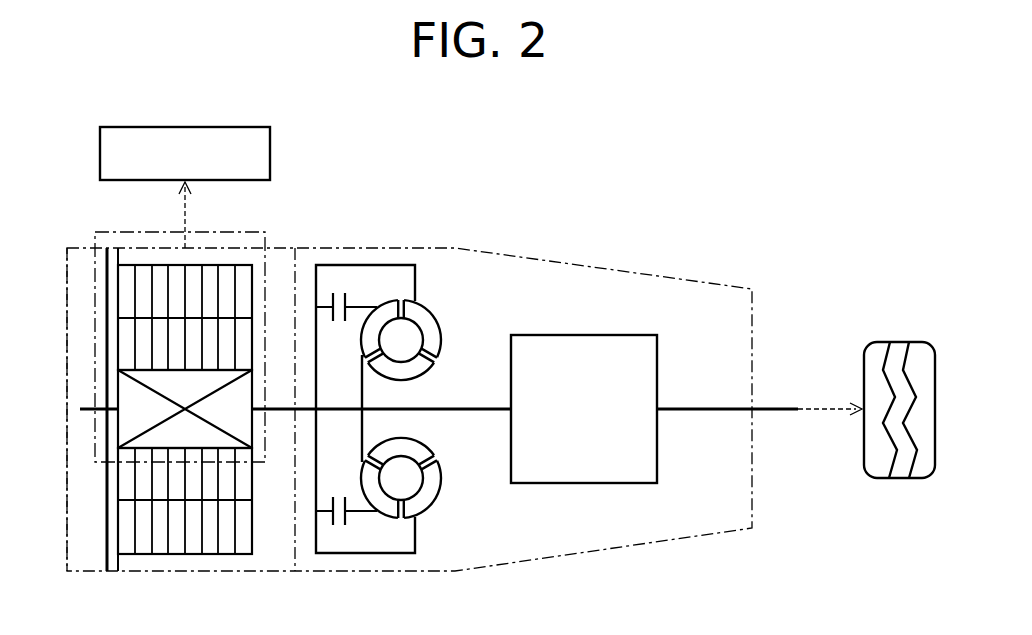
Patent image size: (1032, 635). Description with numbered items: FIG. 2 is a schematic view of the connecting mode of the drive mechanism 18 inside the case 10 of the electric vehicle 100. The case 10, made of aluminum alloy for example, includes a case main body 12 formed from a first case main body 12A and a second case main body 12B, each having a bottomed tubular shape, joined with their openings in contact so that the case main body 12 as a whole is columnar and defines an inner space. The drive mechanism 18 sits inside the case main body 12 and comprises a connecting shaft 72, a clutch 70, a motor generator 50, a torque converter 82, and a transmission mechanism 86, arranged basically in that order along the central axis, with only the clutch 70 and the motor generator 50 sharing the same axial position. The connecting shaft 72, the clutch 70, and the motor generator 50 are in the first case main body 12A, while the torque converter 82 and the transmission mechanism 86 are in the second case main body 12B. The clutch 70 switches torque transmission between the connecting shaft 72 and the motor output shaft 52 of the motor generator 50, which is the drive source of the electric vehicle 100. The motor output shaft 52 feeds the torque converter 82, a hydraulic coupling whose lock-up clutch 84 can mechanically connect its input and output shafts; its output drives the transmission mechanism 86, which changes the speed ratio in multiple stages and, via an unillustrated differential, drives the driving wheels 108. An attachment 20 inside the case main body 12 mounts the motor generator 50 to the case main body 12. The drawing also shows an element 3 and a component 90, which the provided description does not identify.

The vehicle body 3 is at (96, 236).
The case 10 is at (412, 247).
The case main body 12 is at (390, 141).
The first case main body 12A is at (282, 247).
The second case main body 12B is at (385, 247).
The drive mechanism 18 is at (520, 279).
The attachment 20 is at (107, 540).
The motor generator 50 is at (175, 556).
The motor output shaft 52 is at (287, 413).
The clutch 70 is at (107, 392).
The connecting shaft 72 is at (80, 409).
The torque converter 82 is at (417, 283).
The lock-up clutch 84 is at (358, 304).
The transmission mechanism 86 is at (658, 452).
The battery 90 is at (230, 127).
The electric vehicle 100 is at (640, 178).
The driving wheels 108 is at (897, 481).